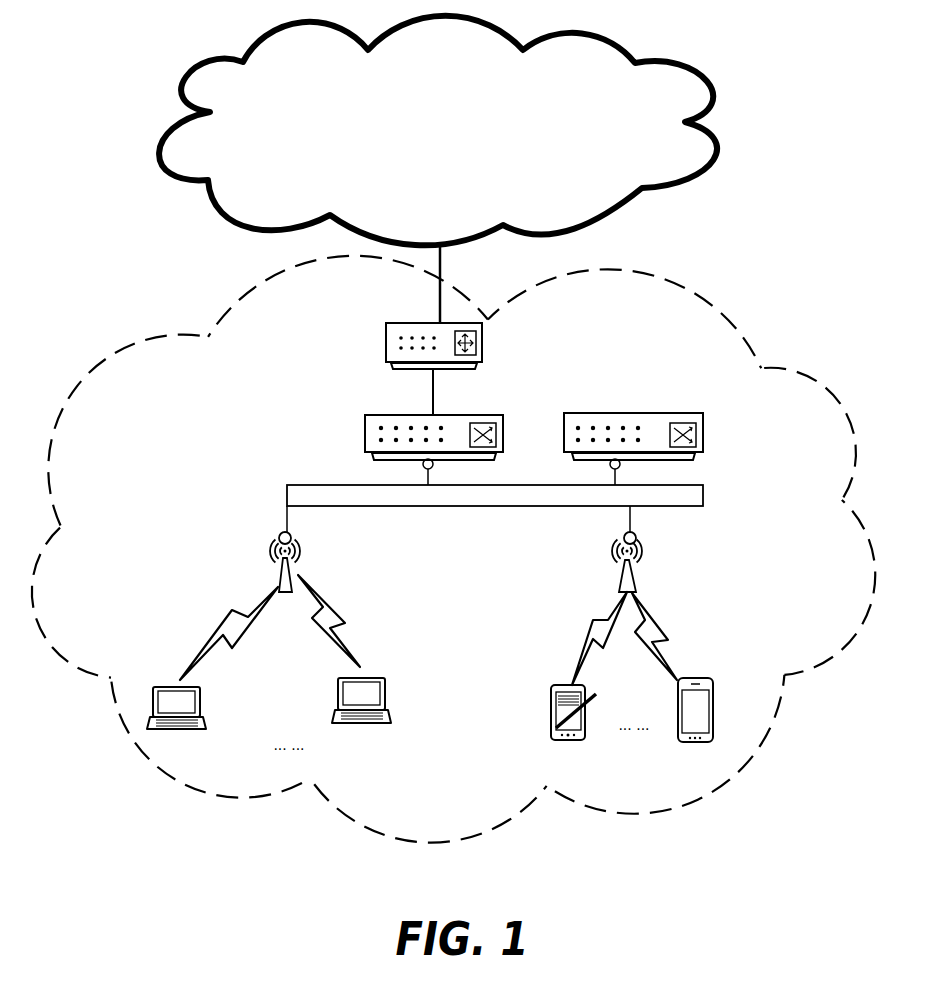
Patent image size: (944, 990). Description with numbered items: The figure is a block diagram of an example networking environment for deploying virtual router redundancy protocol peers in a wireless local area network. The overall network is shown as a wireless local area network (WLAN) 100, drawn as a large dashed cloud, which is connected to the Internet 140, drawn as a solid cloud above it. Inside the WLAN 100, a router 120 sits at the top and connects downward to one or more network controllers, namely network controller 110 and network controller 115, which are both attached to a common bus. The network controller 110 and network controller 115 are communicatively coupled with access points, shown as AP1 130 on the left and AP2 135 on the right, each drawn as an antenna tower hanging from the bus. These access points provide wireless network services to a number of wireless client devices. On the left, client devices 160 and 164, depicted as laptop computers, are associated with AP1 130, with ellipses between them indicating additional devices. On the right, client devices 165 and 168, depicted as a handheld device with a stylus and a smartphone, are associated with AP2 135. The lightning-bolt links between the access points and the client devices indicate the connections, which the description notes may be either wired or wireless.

The wireless local area network 100 is at (163, 315).
The network controller 110 is at (313, 444).
The network controller 115 is at (689, 403).
The router 120 is at (336, 349).
The access point AP1 130 is at (257, 570).
The access point AP2 135 is at (689, 570).
The Internet 140 is at (427, 162).
The client device 160 is at (213, 756).
The client device 164 is at (367, 756).
The client device 165 is at (564, 772).
The client device 168 is at (686, 772).